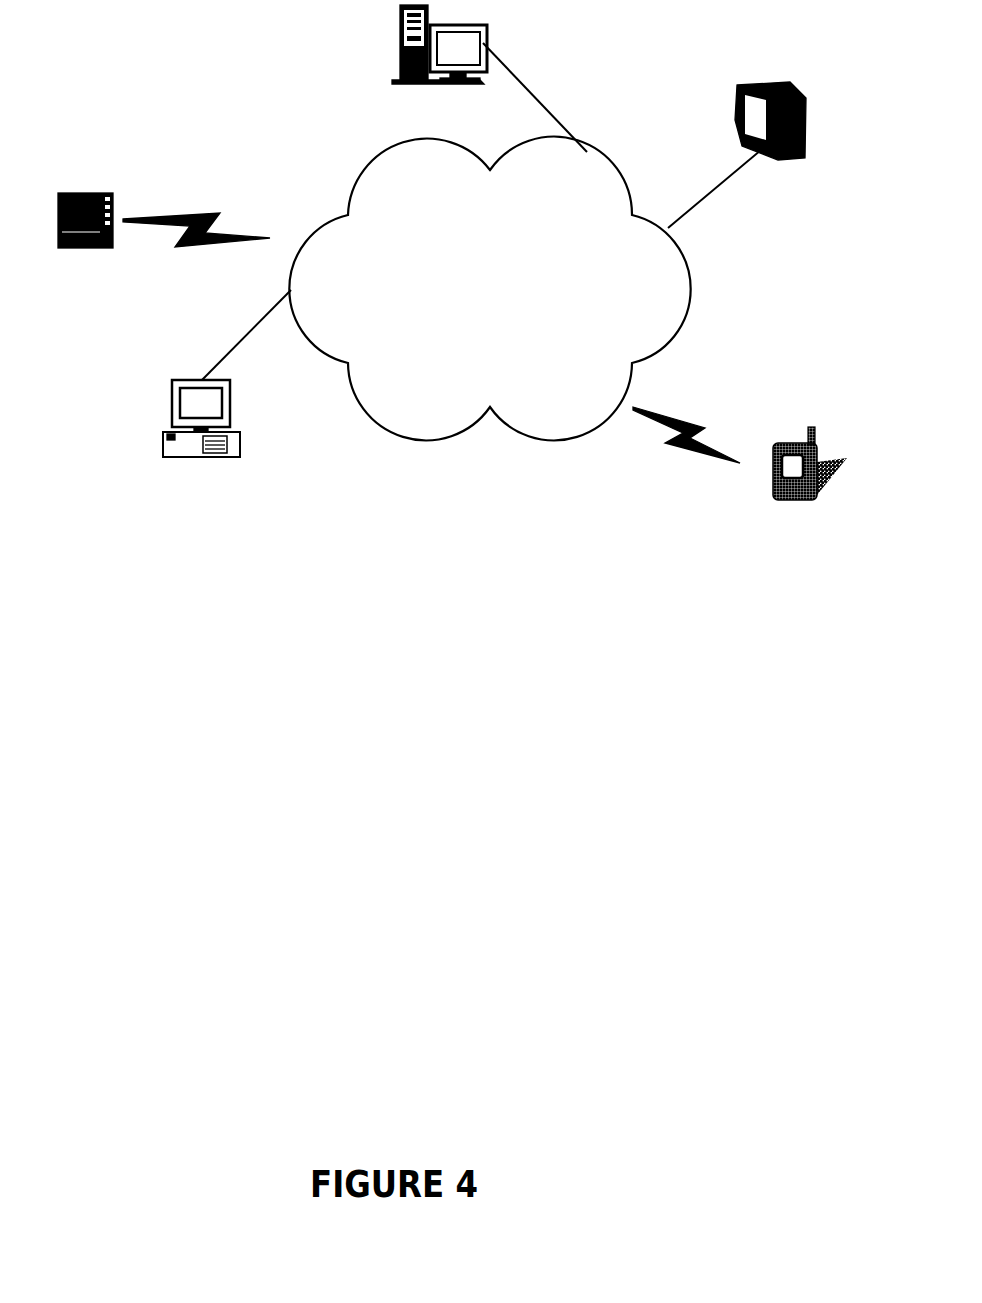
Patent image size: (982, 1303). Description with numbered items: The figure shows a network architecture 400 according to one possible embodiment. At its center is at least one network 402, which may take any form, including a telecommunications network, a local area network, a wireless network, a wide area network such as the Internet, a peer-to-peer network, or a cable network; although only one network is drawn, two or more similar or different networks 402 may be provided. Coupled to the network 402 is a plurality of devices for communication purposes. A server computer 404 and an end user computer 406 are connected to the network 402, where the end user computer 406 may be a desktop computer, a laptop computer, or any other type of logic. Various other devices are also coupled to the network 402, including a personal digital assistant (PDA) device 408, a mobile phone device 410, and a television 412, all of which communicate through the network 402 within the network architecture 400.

The network architecture 400 is at (396, 742).
The network 402 is at (548, 438).
The server computer 404 is at (398, 43).
The end user computer 406 is at (163, 437).
The personal digital assistant (PDA) device 408 is at (82, 192).
The mobile phone device 410 is at (772, 445).
The television 412 is at (753, 78).